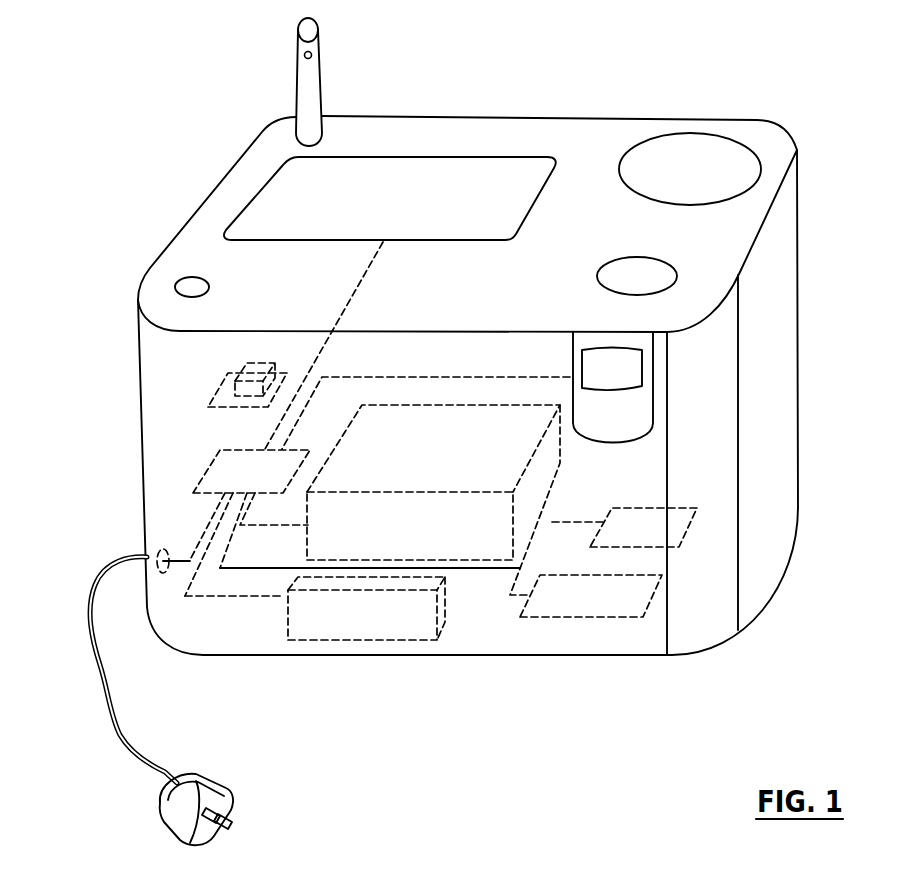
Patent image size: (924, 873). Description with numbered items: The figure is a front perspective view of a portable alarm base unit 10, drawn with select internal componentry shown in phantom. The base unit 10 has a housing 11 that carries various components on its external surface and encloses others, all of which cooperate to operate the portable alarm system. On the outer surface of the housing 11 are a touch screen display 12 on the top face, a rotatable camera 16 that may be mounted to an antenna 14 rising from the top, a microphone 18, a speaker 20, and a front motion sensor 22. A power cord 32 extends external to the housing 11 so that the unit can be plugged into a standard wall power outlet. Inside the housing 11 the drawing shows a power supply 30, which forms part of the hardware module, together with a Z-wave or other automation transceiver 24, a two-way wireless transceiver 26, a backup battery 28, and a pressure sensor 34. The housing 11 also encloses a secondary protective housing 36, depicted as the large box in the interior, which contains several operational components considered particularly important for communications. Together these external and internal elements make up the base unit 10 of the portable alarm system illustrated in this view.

The portable alarm base unit 10 is at (817, 114).
The housing 11 is at (681, 119).
The touch screen display 12 is at (469, 176).
The antenna 14 is at (295, 75).
The rotatable camera 16 is at (313, 56).
The microphone 18 is at (174, 286).
The speaker 20 is at (652, 270).
The front motion sensor 22 is at (629, 376).
The automation transceiver 24 is at (692, 532).
The two-way wireless transceiver 26 is at (584, 606).
The backup battery 28 is at (361, 622).
The power supply 30 is at (232, 468).
The power cord 32 is at (123, 721).
The pressure sensor 34 is at (207, 395).
The secondary protective housing 36 is at (537, 488).